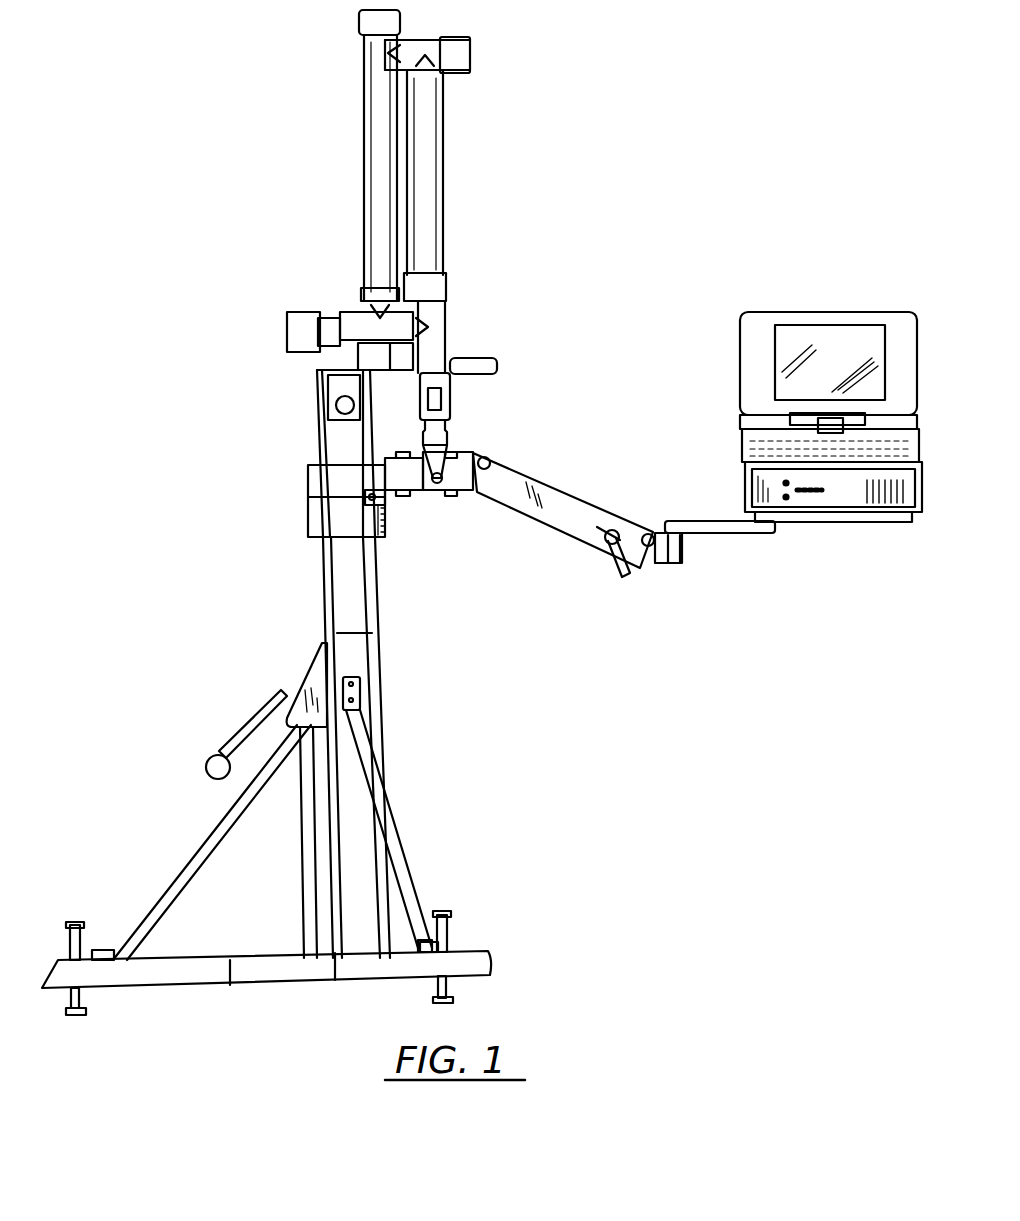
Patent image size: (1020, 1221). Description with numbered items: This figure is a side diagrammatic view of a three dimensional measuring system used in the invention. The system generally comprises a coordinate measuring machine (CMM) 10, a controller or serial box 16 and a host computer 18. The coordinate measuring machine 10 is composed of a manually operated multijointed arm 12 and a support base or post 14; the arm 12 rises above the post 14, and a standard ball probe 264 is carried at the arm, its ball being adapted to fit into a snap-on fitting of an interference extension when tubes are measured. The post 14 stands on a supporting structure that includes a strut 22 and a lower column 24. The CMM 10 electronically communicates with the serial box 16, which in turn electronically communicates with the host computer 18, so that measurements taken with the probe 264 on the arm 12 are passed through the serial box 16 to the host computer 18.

The coordinate measuring machine 10 is at (327, 158).
The multijointed arm 12 is at (362, 228).
The support base or post 14 is at (318, 439).
The controller or serial box 16 is at (745, 478).
The host computer 18 is at (740, 348).
The leg strut 22 is at (405, 790).
The column 24 is at (378, 572).
The ball probe 264 is at (455, 458).